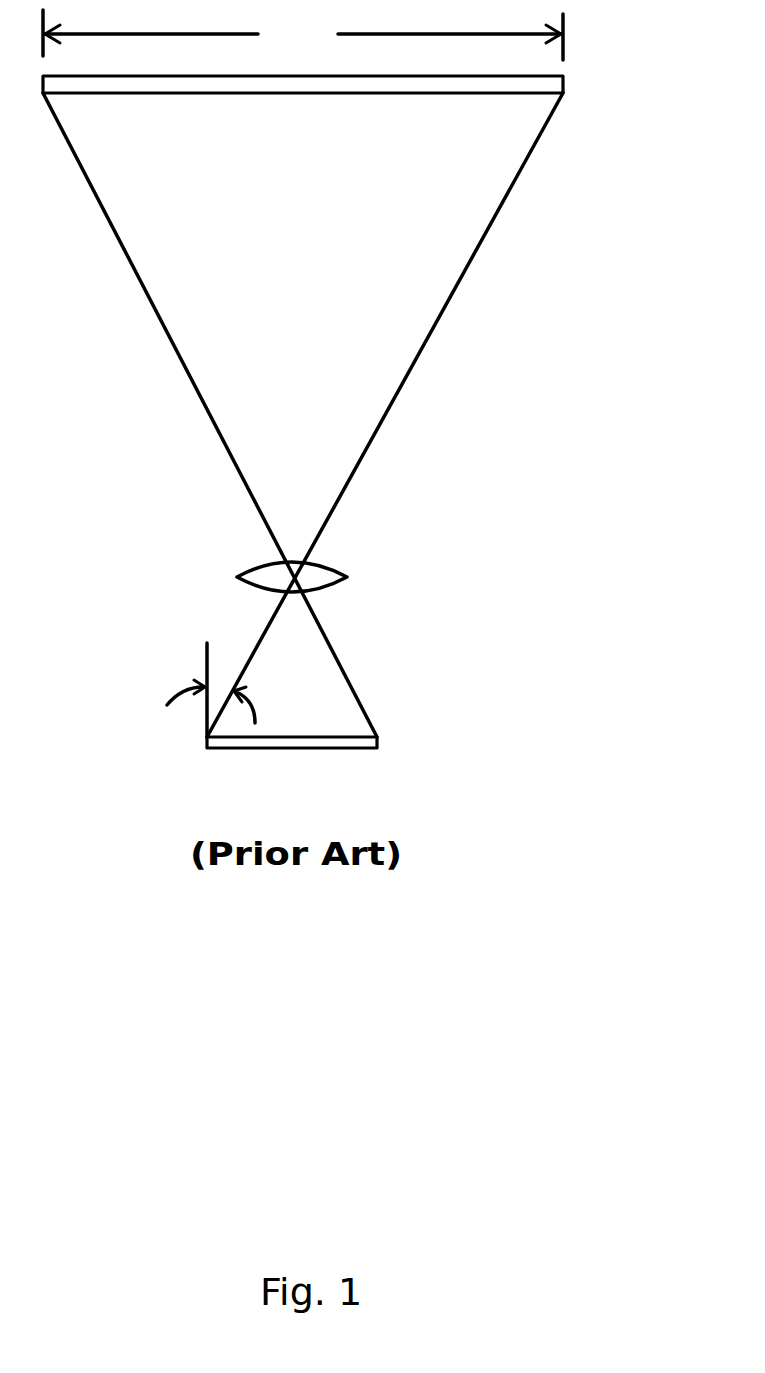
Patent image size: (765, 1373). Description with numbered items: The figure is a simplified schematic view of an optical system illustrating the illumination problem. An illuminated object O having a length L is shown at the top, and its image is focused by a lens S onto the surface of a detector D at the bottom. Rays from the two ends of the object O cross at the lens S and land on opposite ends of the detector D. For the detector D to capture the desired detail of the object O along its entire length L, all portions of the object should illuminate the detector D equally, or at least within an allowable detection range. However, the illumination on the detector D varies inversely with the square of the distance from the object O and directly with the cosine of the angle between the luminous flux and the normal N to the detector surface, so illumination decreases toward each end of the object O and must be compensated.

The length L is at (303, 31).
The illuminated object O is at (565, 88).
The lens S is at (330, 566).
The normal N is at (207, 648).
The detector D is at (377, 741).